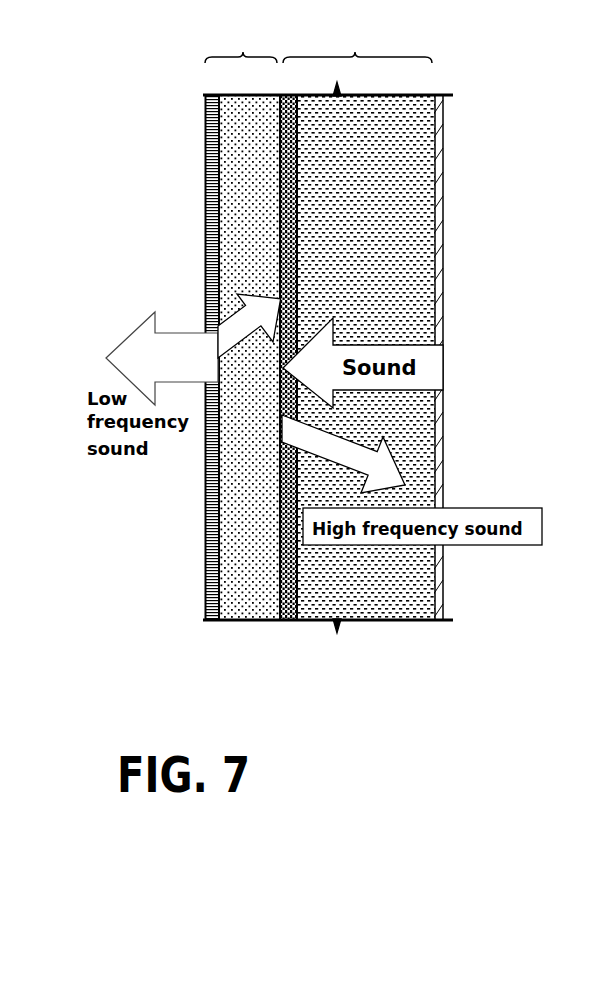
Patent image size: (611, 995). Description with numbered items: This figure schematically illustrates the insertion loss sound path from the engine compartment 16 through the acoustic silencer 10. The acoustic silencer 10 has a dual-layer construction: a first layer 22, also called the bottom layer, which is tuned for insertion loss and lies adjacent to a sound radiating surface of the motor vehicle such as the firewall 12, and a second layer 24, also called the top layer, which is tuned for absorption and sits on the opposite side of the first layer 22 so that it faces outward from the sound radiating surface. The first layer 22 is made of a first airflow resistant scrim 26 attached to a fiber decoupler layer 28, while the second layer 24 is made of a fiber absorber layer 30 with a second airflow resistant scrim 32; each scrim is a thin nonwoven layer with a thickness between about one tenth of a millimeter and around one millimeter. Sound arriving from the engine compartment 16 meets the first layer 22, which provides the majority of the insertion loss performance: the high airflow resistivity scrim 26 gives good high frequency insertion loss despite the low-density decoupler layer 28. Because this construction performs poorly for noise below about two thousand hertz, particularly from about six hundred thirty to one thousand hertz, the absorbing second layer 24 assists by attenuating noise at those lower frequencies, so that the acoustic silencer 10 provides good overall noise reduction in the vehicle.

The acoustic silencer 10 is at (176, 161).
The firewall 12 is at (443, 583).
The engine compartment 16 is at (500, 316).
The first layer 22 is at (357, 46).
The second layer 24 is at (241, 46).
The first airflow resistant scrim 26 is at (283, 500).
The fiber decoupler layer 28 is at (310, 568).
The fiber absorber layer 30 is at (250, 233).
The second airflow resistant scrim 32 is at (207, 214).